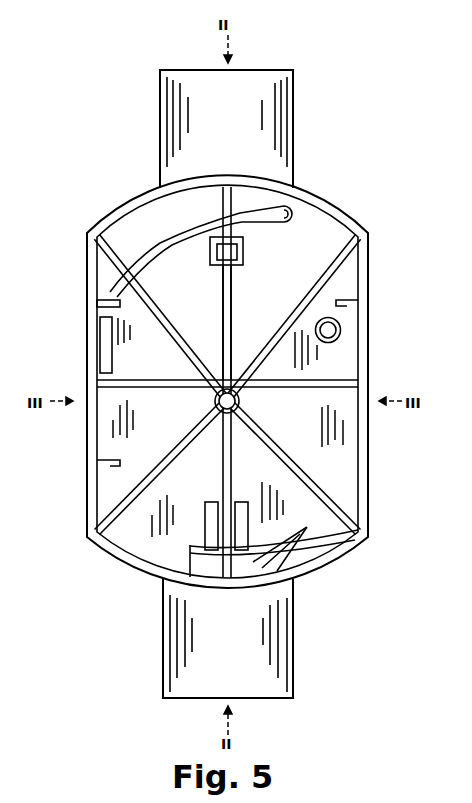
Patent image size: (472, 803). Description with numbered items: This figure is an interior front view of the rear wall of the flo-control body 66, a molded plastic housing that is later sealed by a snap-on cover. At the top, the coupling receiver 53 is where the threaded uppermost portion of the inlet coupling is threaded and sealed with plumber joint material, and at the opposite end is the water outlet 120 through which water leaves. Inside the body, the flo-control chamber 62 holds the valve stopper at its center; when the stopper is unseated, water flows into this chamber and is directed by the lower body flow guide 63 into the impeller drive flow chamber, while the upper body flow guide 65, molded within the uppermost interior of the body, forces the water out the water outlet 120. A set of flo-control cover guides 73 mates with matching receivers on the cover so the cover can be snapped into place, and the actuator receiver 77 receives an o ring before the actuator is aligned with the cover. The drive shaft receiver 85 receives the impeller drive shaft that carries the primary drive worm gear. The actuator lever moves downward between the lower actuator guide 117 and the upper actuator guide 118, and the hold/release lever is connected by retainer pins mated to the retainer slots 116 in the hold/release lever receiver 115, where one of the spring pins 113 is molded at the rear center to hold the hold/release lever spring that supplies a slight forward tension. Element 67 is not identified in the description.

The coupling receiver 53 is at (258, 678).
The flo-control chamber 62 is at (257, 562).
The lower body flow guide 63 is at (165, 567).
The upper body flow guide 65 is at (165, 240).
The flo-control body 66 is at (98, 535).
The rib 67 is at (334, 267).
The flo-control cover guides 73 is at (97, 303).
The actuator receiver 77 is at (341, 330).
The drive shaft receiver 85 is at (214, 401).
The spring pins 113 is at (235, 262).
The hold/release lever receiver 115 is at (210, 258).
The retainer slots 116 is at (243, 250).
The lower actuator guide 117 is at (217, 500).
The upper actuator guide 118 is at (117, 364).
The water outlet 120 is at (198, 207).